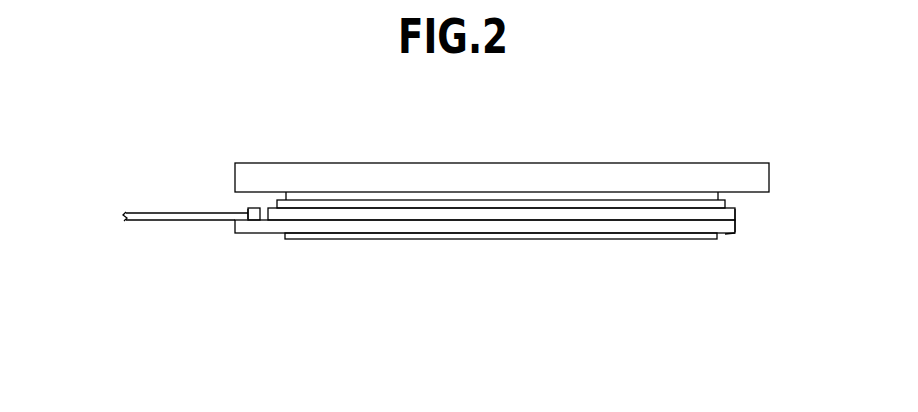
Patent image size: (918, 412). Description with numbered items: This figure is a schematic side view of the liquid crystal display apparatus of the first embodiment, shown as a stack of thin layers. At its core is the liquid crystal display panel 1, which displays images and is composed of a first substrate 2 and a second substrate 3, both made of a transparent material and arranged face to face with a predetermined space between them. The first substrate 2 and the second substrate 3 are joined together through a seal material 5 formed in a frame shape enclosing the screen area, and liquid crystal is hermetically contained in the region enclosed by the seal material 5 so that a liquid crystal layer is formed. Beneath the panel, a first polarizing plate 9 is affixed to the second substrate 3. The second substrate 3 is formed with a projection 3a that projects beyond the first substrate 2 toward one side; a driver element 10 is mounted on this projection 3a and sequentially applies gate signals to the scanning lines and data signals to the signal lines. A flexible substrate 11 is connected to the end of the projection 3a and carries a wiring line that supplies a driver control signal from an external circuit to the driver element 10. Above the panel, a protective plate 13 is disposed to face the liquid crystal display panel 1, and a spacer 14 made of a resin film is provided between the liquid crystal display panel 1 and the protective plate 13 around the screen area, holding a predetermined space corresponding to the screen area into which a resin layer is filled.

The liquid crystal display panel 1 is at (723, 236).
The first substrate 2 is at (463, 213).
The second substrate 3 is at (542, 225).
The projection 3a is at (263, 228).
The seal material 5 is at (728, 222).
The first polarizing plate 9 is at (350, 238).
The driver element 10 is at (248, 210).
The flexible substrate 11 is at (170, 223).
The protective plate 13 is at (407, 175).
The spacer 14 is at (573, 196).